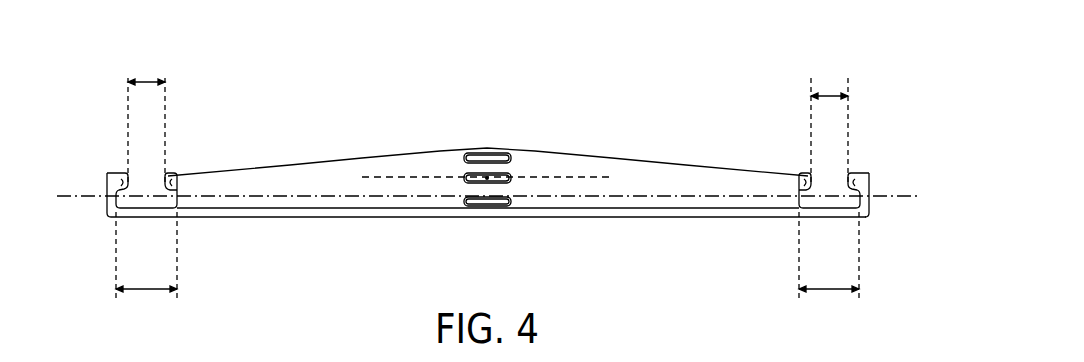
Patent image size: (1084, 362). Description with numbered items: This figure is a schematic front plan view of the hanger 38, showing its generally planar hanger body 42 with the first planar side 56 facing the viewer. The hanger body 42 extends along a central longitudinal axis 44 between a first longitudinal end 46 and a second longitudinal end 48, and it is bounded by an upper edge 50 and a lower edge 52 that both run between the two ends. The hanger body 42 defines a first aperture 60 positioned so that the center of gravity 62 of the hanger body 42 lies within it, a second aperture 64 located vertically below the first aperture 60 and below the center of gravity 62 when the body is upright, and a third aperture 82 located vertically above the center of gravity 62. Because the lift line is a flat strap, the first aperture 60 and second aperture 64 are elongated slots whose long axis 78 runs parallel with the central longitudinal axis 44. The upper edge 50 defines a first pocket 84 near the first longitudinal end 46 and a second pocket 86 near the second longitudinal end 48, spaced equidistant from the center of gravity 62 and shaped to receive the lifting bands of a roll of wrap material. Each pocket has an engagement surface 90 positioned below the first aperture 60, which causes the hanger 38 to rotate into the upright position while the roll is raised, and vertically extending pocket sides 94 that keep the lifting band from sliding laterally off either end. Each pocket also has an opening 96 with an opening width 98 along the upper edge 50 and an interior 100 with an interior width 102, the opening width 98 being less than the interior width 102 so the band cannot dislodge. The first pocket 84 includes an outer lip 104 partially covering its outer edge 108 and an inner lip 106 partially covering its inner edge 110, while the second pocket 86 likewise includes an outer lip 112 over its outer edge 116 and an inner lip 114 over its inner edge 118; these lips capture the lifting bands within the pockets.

The hanger 38 is at (598, 68).
The hanger body 42 is at (650, 85).
The central longitudinal axis 44 is at (713, 199).
The first longitudinal end 46 is at (870, 210).
The second longitudinal end 48 is at (108, 210).
The upper edge 50 is at (305, 163).
The lower edge 52 is at (318, 216).
The first planar side 56 is at (345, 165).
The first aperture 60 is at (505, 172).
The center of gravity 62 is at (487, 177).
The second aperture 64 is at (492, 204).
The long axis 78 is at (422, 176).
The third aperture 82 is at (468, 156).
The first pocket 84 is at (853, 97).
The second pocket 86 is at (123, 97).
The engagement surface 90 is at (152, 205).
The pocket sides 94 is at (131, 193).
The opening 96 is at (148, 178).
The opening width 98 is at (143, 80).
The interior 100 is at (107, 185).
The interior width 102 is at (138, 292).
The outer lip 104 is at (848, 176).
The inner lip 106 is at (800, 176).
The outer edge 108 is at (857, 178).
The inner edge 110 is at (785, 178).
The outer lip 112 is at (127, 176).
The inner lip 114 is at (178, 176).
The outer edge 116 is at (108, 176).
The inner edge 118 is at (186, 178).